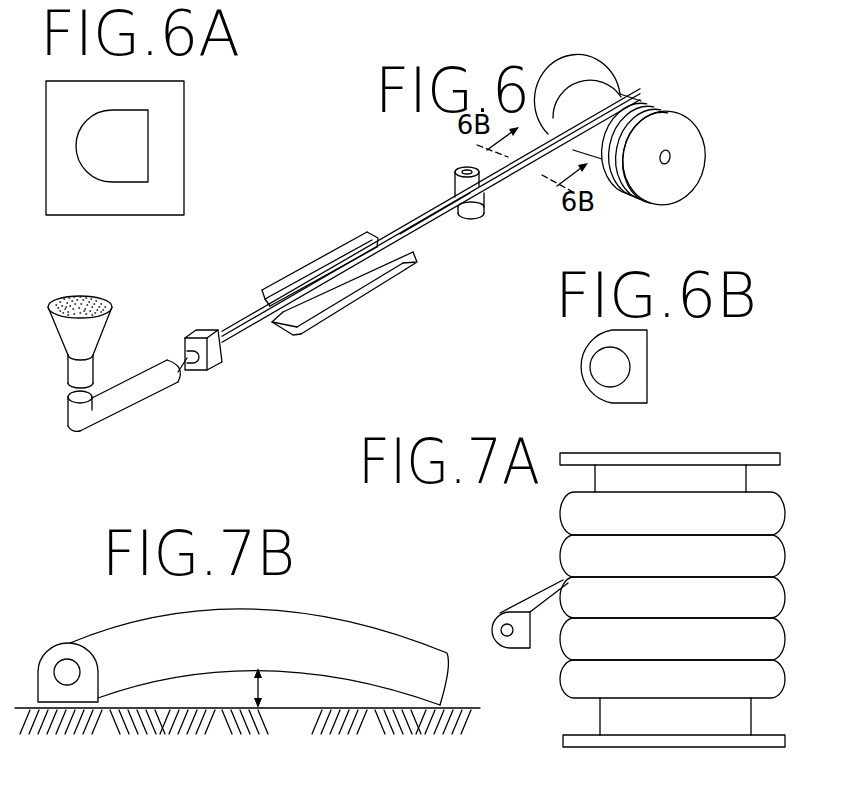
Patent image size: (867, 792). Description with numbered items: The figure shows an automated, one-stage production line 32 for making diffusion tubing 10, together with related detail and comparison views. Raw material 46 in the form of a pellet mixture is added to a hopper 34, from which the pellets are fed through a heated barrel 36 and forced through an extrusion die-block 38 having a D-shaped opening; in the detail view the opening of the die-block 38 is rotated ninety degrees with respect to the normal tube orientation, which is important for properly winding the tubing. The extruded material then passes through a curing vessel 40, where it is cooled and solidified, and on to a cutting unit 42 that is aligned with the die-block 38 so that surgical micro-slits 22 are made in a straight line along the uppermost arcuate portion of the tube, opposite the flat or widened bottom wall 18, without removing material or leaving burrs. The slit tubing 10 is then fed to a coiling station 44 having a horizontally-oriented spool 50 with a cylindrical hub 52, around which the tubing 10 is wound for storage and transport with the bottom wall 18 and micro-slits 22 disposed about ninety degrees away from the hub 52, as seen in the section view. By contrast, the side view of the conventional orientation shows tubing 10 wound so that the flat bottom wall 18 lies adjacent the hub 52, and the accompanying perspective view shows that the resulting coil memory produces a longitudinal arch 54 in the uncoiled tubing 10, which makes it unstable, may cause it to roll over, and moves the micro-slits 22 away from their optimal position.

In FIG. 6, the tubing 10 is at (524, 182).
In FIG. 6B, the tubing 10 is at (566, 385).
In FIG. 7A, the tubing 10 is at (768, 553).
In FIG. 7B, the tubing 10 is at (372, 618).
In FIG. 6, the flat or widened bottom wall 18 is at (440, 222).
In FIG. 6B, the flat or widened bottom wall 18 is at (650, 345).
In FIG. 7A, the flat or widened bottom wall 18 is at (546, 626).
In FIG. 7A, the micro-slits 22 is at (495, 612).
In FIG. 6, the production line 32 is at (290, 228).
In FIG. 6, the hopper 34 is at (72, 340).
In FIG. 6, the heated barrel 36 is at (140, 404).
In FIG. 6A, the extrusion die-block 38 is at (178, 124).
In FIG. 6, the extrusion die-block 38 is at (222, 370).
In FIG. 6, the curing vessel 40 is at (368, 290).
In FIG. 6, the cutting unit 42 is at (462, 170).
In FIG. 6, the coiling station 44 is at (698, 100).
In FIG. 6, the raw material 46 is at (80, 298).
In FIG. 6, the spool 50 is at (665, 183).
In FIG. 7A, the spool 50 is at (698, 748).
In FIG. 6, the cylindrical hub 52 is at (578, 100).
In FIG. 7A, the cylindrical hub 52 is at (728, 479).
In FIG. 7B, the longitudinal arch 54 is at (263, 690).